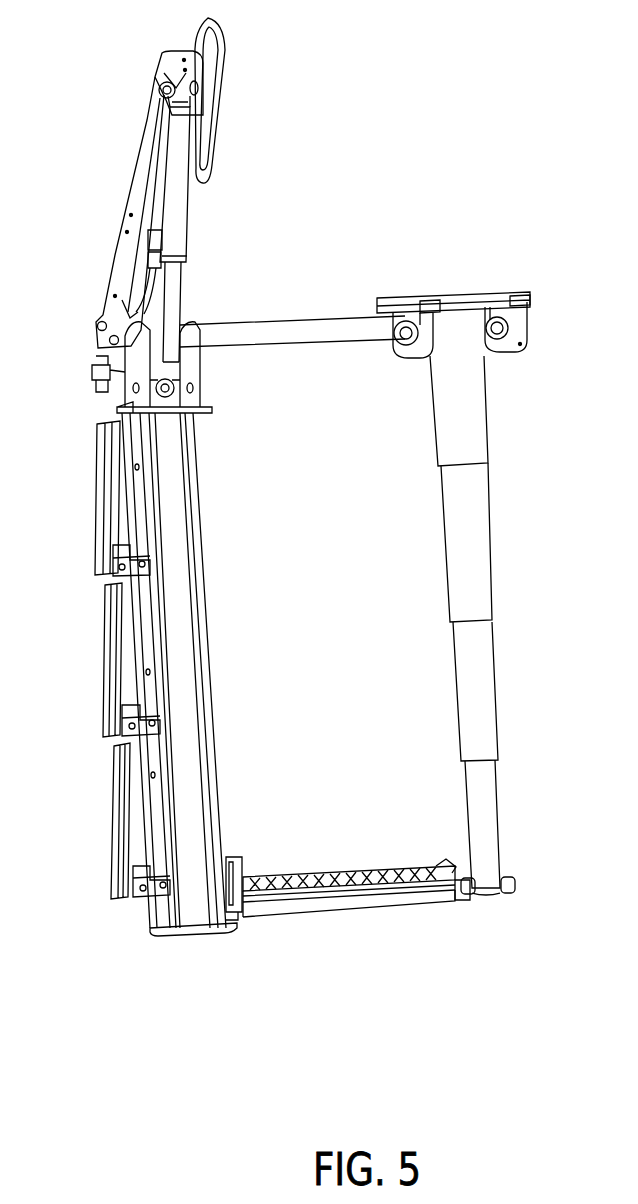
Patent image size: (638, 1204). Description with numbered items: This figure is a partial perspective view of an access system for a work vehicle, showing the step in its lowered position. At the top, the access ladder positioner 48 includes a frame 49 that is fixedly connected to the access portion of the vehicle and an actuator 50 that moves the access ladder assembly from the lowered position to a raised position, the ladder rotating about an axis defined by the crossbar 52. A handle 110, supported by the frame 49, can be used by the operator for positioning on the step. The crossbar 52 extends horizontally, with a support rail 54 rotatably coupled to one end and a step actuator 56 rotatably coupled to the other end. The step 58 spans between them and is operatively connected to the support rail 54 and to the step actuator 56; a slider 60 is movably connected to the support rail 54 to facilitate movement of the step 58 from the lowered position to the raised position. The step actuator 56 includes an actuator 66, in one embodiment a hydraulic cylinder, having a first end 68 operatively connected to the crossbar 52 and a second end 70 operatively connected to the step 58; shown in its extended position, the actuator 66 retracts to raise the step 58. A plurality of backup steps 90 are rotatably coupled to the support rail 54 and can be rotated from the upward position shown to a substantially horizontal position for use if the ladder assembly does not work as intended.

The access ladder positioner 48 is at (143, 85).
The frame 49 is at (138, 197).
The actuator 50 is at (178, 228).
The crossbar 52 is at (300, 322).
The support rail 54 is at (155, 947).
The step actuator 56 is at (423, 975).
The step 58 is at (350, 907).
The slider 60 is at (241, 913).
The actuator 66 is at (492, 558).
The first end 68 is at (463, 330).
The second end 70 is at (490, 888).
The backup steps 90 is at (100, 543).
The handle 110 is at (226, 44).